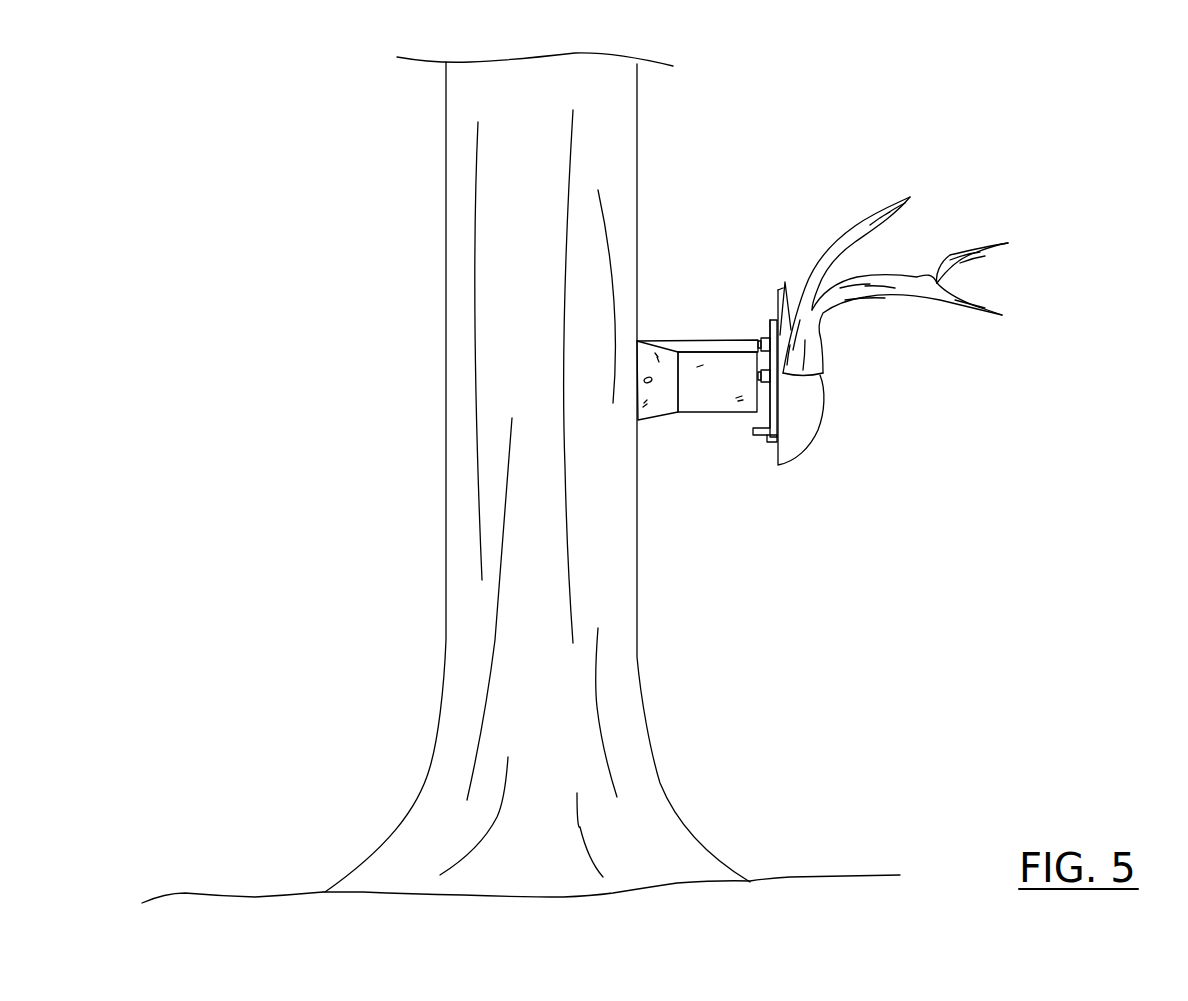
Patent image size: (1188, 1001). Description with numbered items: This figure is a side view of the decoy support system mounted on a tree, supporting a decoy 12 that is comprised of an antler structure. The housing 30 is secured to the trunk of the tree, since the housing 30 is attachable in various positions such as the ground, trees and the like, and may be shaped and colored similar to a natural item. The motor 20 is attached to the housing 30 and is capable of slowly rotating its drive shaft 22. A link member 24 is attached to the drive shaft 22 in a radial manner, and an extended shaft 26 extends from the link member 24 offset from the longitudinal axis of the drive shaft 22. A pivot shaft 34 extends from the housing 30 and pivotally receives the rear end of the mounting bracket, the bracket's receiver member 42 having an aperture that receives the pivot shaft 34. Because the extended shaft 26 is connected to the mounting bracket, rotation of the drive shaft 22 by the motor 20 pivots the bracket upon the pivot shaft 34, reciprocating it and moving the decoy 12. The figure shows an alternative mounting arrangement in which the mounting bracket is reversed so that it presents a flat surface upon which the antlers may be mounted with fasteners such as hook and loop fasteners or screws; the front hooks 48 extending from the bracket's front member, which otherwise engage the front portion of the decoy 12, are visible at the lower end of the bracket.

The decoy 12 is at (817, 395).
The motor 20 is at (736, 403).
The drive shaft 22 is at (766, 338).
The link member 24 is at (760, 385).
The extended shaft 26 is at (767, 437).
The housing 30 is at (647, 352).
The pivot shaft 34 is at (766, 342).
The receiver member 42 is at (768, 325).
The front hooks 48 is at (767, 445).